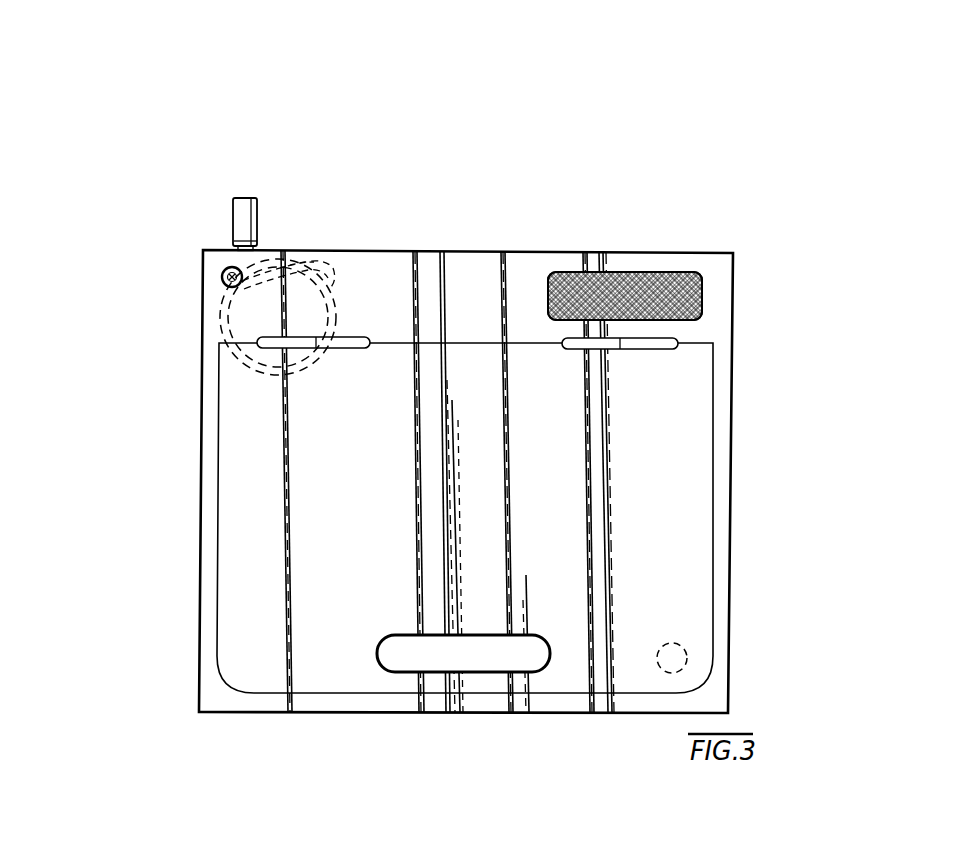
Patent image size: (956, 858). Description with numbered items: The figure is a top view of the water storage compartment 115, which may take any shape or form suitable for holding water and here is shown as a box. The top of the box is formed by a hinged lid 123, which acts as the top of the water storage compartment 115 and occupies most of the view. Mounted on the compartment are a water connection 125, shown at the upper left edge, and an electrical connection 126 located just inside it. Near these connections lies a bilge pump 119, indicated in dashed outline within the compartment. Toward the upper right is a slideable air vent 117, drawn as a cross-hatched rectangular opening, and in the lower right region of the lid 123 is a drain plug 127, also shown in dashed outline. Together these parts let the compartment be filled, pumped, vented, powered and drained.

The water storage compartment 115 is at (460, 290).
The slideable air vent 117 is at (632, 288).
The bilge pump 119 is at (278, 313).
The hinged lid 123 is at (307, 575).
The water connection 125 is at (247, 197).
The electrical connection 126 is at (225, 272).
The drain plug 127 is at (673, 657).